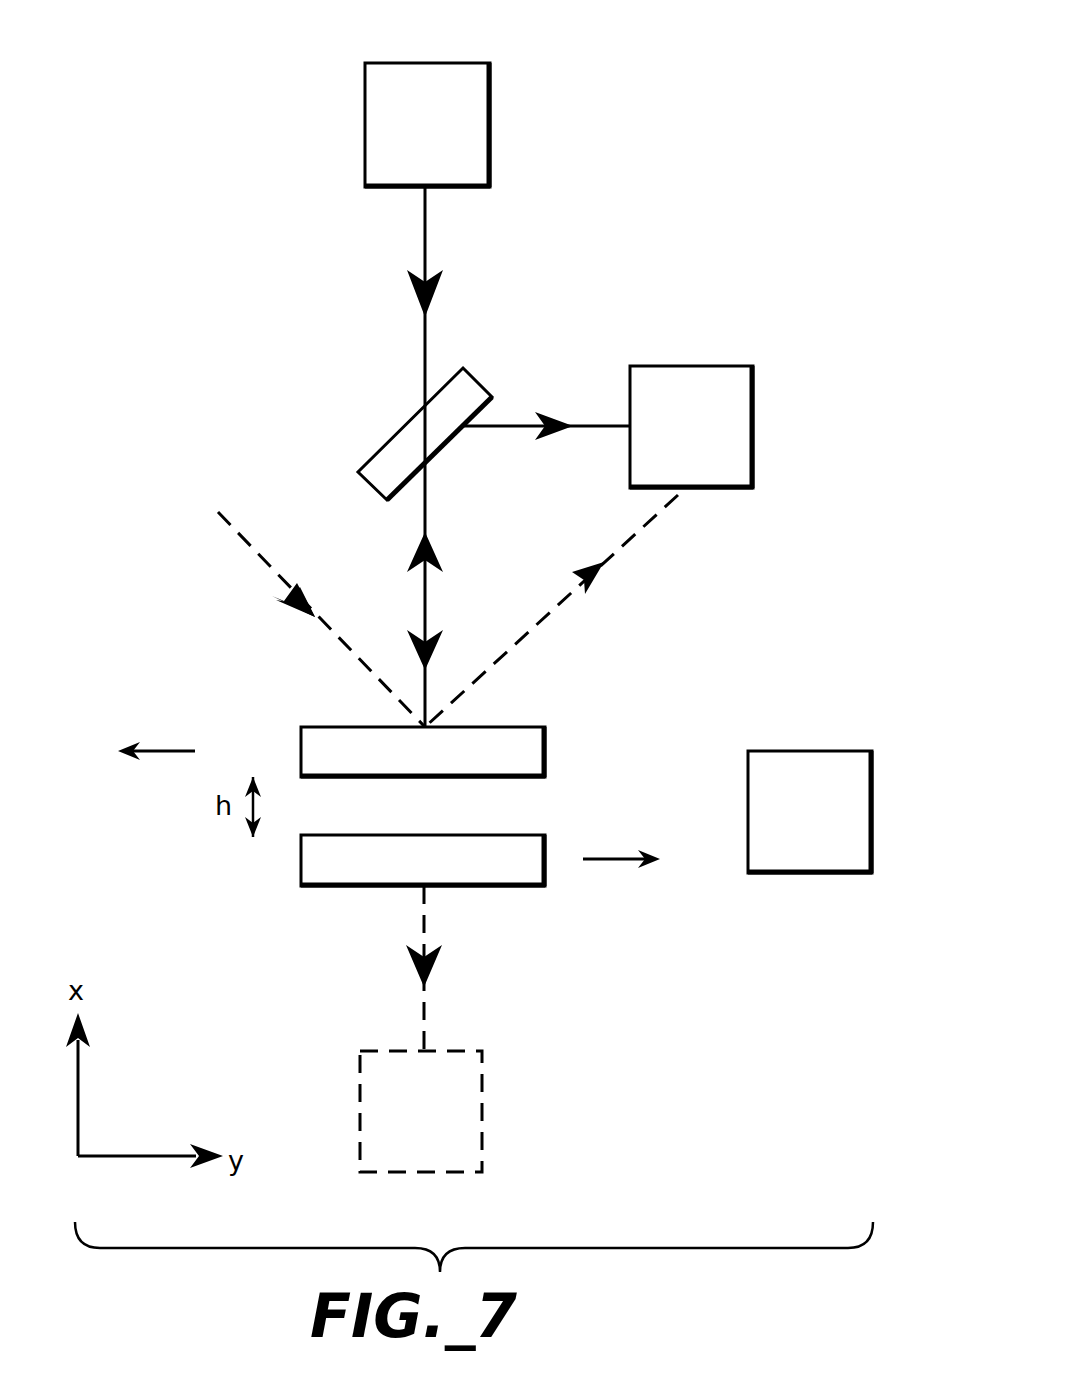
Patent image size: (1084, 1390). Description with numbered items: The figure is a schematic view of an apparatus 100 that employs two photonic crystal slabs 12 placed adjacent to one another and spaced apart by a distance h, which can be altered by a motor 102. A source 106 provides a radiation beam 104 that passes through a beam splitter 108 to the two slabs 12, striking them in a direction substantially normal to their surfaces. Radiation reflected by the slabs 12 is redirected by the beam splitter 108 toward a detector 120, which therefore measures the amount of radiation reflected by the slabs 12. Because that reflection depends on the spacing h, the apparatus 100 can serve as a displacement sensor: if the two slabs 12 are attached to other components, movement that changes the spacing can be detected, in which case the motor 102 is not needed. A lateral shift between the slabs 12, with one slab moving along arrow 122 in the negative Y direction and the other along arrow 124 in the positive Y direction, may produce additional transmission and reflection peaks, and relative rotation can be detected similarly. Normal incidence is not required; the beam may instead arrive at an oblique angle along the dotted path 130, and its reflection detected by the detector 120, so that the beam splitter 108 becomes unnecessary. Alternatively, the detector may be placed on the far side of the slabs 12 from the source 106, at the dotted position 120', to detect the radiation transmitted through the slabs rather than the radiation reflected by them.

The apparatus 100 is at (755, 48).
The source 106 is at (492, 133).
The radiation beam 104 is at (427, 242).
The beam splitter 108 is at (476, 384).
The detector 120 is at (658, 427).
The path 130 is at (237, 532).
The photonic crystal slabs 12 is at (520, 733).
The arrow 122 is at (157, 751).
The arrow 124 is at (617, 859).
The motor 102 is at (765, 751).
The position 120' is at (477, 1029).